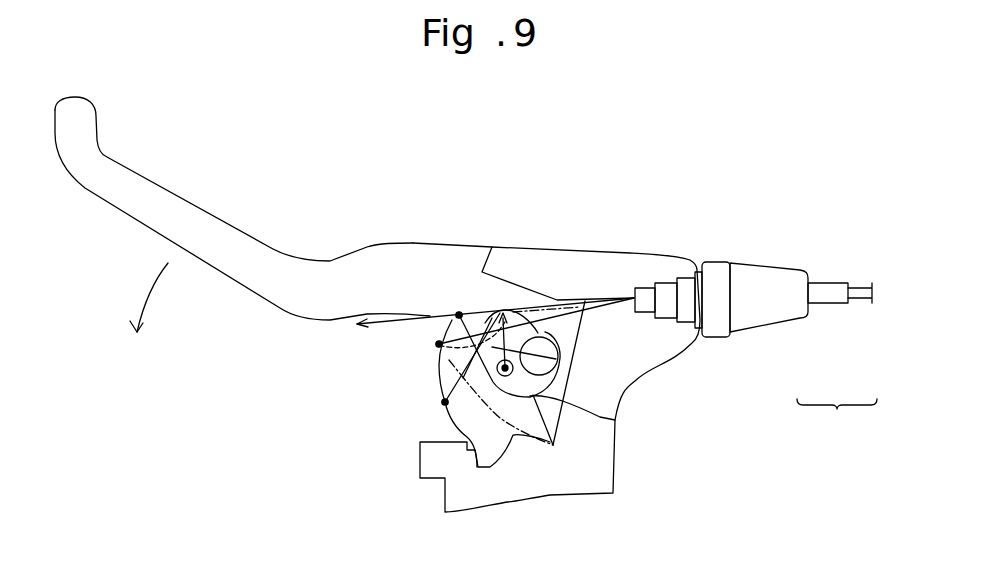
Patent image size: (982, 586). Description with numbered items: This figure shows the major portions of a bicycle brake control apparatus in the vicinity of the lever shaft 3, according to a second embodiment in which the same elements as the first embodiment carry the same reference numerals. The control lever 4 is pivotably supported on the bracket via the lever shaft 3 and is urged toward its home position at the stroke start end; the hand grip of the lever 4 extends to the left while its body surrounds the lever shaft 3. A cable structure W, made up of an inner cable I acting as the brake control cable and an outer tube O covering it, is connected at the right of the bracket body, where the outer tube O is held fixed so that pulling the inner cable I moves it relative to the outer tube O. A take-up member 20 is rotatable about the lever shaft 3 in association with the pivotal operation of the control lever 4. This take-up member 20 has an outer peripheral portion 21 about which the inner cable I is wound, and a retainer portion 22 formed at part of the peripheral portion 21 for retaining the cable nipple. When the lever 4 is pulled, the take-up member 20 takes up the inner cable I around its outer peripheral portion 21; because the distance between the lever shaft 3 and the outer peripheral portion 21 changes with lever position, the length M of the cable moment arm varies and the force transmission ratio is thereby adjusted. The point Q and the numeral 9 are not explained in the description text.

The brake lever 9 is at (193, 199).
The control lever 4 is at (430, 177).
The lever pivot point Q is at (430, 316).
The outer peripheral portion 21 is at (547, 333).
The retainer portion 22 is at (445, 402).
The length of the cable moment arm M is at (492, 338).
The lever shaft 3 is at (615, 418).
The take-up member 20 is at (564, 468).
The outer tube O is at (825, 307).
The inner cable I is at (853, 307).
The cable structure W is at (837, 424).